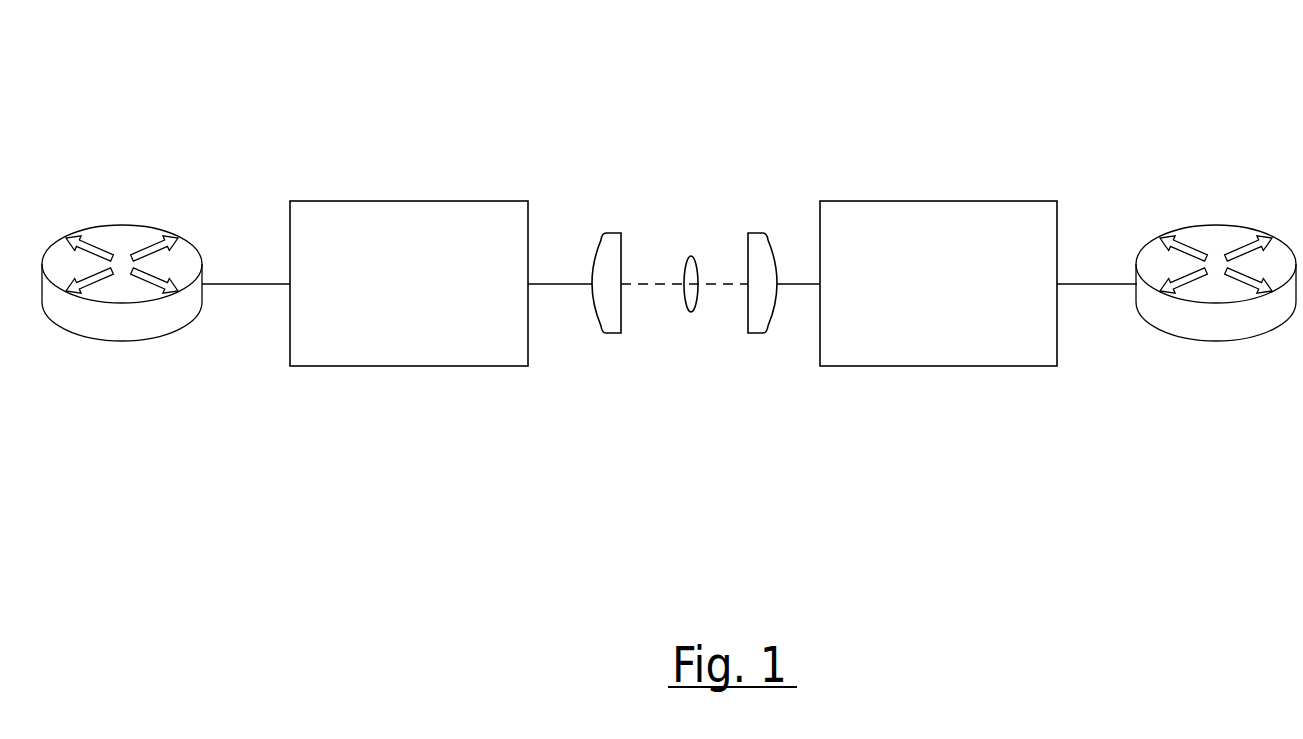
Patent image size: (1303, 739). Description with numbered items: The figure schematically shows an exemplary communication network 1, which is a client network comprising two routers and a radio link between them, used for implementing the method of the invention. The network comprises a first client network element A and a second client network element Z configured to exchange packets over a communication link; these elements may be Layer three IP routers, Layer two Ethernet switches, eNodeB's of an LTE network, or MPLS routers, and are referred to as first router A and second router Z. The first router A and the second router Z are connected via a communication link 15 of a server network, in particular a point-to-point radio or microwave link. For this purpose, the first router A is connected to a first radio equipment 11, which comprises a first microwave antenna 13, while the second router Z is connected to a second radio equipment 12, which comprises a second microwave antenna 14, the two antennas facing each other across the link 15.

The communication network 1 is at (279, 139).
The first radio equipment 11 is at (409, 283).
The second radio equipment 12 is at (938, 283).
The first microwave antenna 13 is at (626, 203).
The second microwave antenna 14 is at (764, 203).
The communication link 15 is at (692, 312).
The first client network element A is at (120, 225).
The second client network element Z is at (1218, 225).